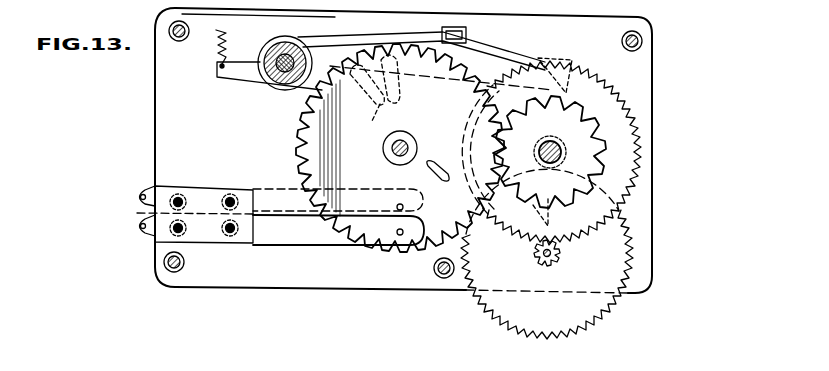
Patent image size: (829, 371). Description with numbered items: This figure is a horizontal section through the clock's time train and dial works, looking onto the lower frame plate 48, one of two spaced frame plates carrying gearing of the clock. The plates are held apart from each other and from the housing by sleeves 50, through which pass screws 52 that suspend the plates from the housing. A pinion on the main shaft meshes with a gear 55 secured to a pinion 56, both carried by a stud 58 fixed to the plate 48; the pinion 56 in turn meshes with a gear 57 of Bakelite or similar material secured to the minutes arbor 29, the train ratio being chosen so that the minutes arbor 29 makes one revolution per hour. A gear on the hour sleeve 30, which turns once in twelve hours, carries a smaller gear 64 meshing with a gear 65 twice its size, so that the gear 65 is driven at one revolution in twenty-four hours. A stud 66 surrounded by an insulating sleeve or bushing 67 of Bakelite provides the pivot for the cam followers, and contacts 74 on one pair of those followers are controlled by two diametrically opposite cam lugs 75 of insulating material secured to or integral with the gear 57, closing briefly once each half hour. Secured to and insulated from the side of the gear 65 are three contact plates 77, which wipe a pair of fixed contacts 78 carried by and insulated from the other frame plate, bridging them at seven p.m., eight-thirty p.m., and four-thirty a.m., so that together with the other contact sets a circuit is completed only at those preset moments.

The minutes arbor 29 is at (555, 144).
The hour sleeve 30 is at (534, 148).
The lower frame plate 48 is at (316, 272).
The sleeve 50 is at (185, 42).
The screw 52 is at (171, 38).
The gear 55 is at (590, 312).
The pinion 56 is at (558, 259).
The gear 57 is at (621, 164).
The stud 58 is at (545, 256).
The smaller gear 64 is at (567, 185).
The gear 65 is at (297, 145).
The stud 66 is at (302, 47).
The sleeve or bushing 67 is at (273, 85).
The contacts 74 is at (468, 38).
The cam lug 75 is at (573, 89).
The contact plate 77 is at (383, 117).
The fixed contact 78 is at (277, 203).